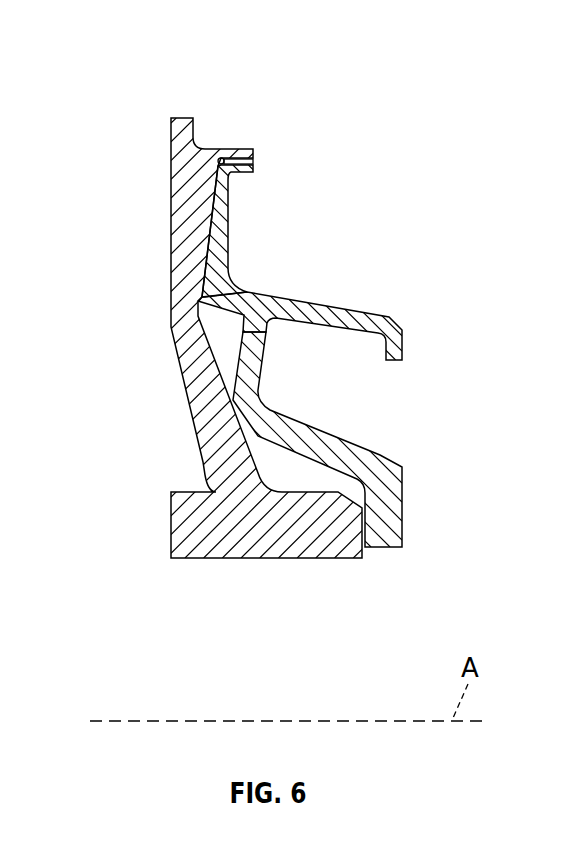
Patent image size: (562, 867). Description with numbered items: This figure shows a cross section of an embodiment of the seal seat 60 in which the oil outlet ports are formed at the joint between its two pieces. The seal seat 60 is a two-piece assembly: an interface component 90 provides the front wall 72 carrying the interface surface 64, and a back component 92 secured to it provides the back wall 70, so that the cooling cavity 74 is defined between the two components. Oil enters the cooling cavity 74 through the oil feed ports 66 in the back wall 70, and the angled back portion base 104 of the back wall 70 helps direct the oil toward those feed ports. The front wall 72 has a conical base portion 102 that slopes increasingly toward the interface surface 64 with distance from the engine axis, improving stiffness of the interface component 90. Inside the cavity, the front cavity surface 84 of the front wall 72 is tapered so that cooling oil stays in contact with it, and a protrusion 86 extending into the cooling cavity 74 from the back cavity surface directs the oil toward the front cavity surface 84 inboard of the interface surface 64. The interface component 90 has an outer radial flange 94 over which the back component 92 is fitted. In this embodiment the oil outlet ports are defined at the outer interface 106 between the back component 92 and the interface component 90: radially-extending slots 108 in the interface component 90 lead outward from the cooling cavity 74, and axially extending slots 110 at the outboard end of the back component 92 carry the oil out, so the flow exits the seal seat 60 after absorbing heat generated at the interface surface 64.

The seal seat 60 is at (317, 123).
The interface surface 64 is at (171, 178).
The oil feed ports 66 is at (262, 328).
The back wall 70 is at (188, 370).
The front wall 72 is at (252, 377).
The cooling cavity 74 is at (205, 243).
The front cavity surface 84 is at (198, 272).
The protrusion 86 is at (197, 301).
The interface component 90 is at (148, 335).
The back component 92 is at (320, 263).
The outer radial flange 94 is at (212, 148).
The conical base portion 102 is at (198, 418).
The angled back portion base 104 is at (352, 448).
The outer interface 106 is at (233, 137).
The radially-extending slots 108 is at (224, 172).
The axially extending slots 110 is at (253, 162).